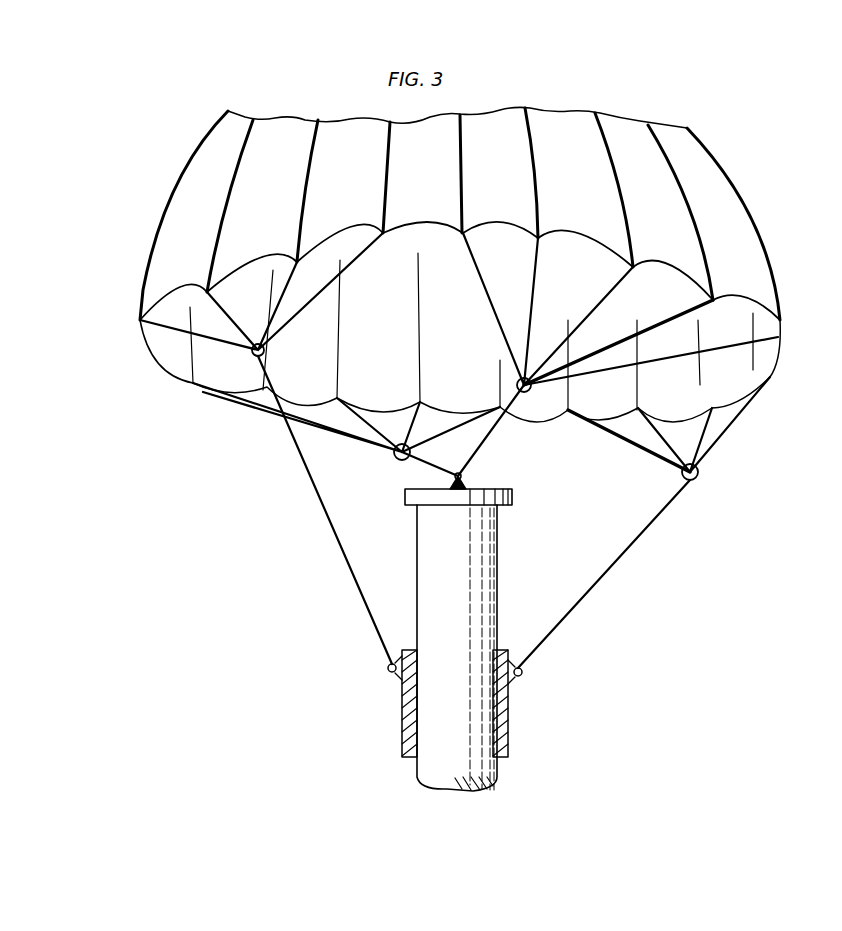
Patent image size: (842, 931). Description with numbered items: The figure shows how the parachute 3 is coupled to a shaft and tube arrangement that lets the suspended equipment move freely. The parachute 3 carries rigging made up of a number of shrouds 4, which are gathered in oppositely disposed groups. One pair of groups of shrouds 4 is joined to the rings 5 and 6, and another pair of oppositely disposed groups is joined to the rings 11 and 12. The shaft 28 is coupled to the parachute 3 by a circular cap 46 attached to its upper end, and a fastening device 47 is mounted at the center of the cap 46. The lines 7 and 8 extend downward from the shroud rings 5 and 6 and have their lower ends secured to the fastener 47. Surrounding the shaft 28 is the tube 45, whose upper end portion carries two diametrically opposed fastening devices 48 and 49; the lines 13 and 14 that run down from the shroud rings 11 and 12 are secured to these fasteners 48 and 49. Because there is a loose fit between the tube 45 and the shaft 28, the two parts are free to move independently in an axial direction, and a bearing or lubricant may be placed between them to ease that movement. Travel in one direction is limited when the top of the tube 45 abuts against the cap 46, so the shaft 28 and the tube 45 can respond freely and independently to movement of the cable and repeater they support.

The parachute 3 is at (735, 217).
The shrouds 4 is at (167, 335).
The ring 5 is at (396, 459).
The ring 6 is at (528, 392).
The line 7 is at (437, 463).
The line 8 is at (483, 445).
The ring 11 is at (251, 356).
The ring 12 is at (699, 474).
The line 13 is at (340, 562).
The line 14 is at (603, 573).
The shaft 28 is at (499, 573).
The tube 45 is at (508, 729).
The circular cap 46 is at (514, 496).
The fastening device 47 is at (466, 479).
The fastening device 48 is at (388, 671).
The fastening device 49 is at (522, 676).